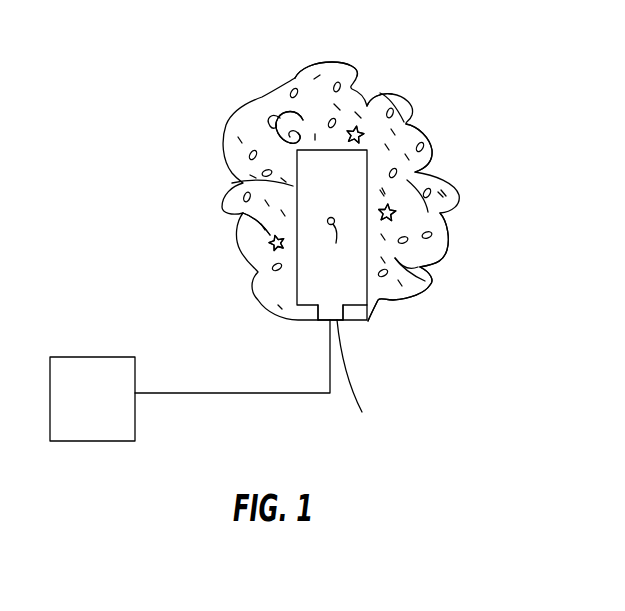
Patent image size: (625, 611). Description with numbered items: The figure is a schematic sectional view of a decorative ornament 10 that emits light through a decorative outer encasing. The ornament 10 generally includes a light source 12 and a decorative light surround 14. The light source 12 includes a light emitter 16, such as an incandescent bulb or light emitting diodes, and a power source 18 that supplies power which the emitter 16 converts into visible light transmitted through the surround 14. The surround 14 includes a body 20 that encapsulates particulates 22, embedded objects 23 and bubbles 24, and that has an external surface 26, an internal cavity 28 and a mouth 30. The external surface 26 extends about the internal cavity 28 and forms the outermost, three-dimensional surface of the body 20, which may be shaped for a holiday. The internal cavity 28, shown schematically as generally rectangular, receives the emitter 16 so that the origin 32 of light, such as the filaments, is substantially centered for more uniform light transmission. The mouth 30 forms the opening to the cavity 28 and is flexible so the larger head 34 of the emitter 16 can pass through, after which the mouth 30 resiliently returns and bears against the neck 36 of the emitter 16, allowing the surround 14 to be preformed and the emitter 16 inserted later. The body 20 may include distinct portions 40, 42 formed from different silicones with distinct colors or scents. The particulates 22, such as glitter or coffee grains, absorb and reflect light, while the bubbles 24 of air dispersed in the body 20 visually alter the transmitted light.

The decorative ornament 10 is at (190, 163).
The light source 12 is at (360, 322).
The decorative light surround 14 is at (378, 92).
The light emitter 16 is at (282, 284).
The power source 18 is at (110, 357).
The body 20 is at (386, 310).
The particulates 22 is at (425, 281).
The embedded objects 23 is at (265, 104).
The bubbles 24 is at (423, 238).
The external surface 26 is at (303, 62).
The internal cavity 28 is at (232, 183).
The mouth 30 is at (320, 324).
The origin 32 is at (331, 248).
The head 34 is at (270, 248).
The neck 36 is at (362, 384).
The portion 40 is at (260, 95).
The portion 42 is at (422, 127).